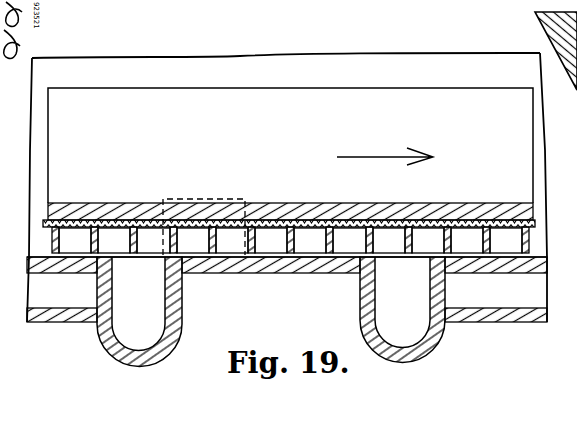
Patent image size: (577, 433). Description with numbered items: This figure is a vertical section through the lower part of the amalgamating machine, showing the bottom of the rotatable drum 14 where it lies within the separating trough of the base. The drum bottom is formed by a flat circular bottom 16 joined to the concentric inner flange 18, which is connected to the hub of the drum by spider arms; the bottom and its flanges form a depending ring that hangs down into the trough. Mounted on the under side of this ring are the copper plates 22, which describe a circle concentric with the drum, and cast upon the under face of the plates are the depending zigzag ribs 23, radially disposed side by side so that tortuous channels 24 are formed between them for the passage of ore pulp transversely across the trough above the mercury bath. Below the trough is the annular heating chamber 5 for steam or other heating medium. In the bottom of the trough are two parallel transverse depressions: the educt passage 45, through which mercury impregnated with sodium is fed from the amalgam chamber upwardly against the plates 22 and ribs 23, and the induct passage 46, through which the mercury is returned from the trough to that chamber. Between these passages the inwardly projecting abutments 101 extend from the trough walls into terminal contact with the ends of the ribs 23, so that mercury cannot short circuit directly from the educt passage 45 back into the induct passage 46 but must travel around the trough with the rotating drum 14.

The drum 14 is at (261, 58).
The inner flange 18 is at (219, 97).
The circular bottom 16 is at (264, 206).
The copper plates 22 is at (310, 226).
The zigzag ribs 23 is at (402, 237).
The abutments 101 is at (190, 199).
The channels 24 is at (267, 240).
The induct passage 46 is at (157, 309).
The educt passage 45 is at (382, 299).
The heating chamber 5 is at (67, 299).